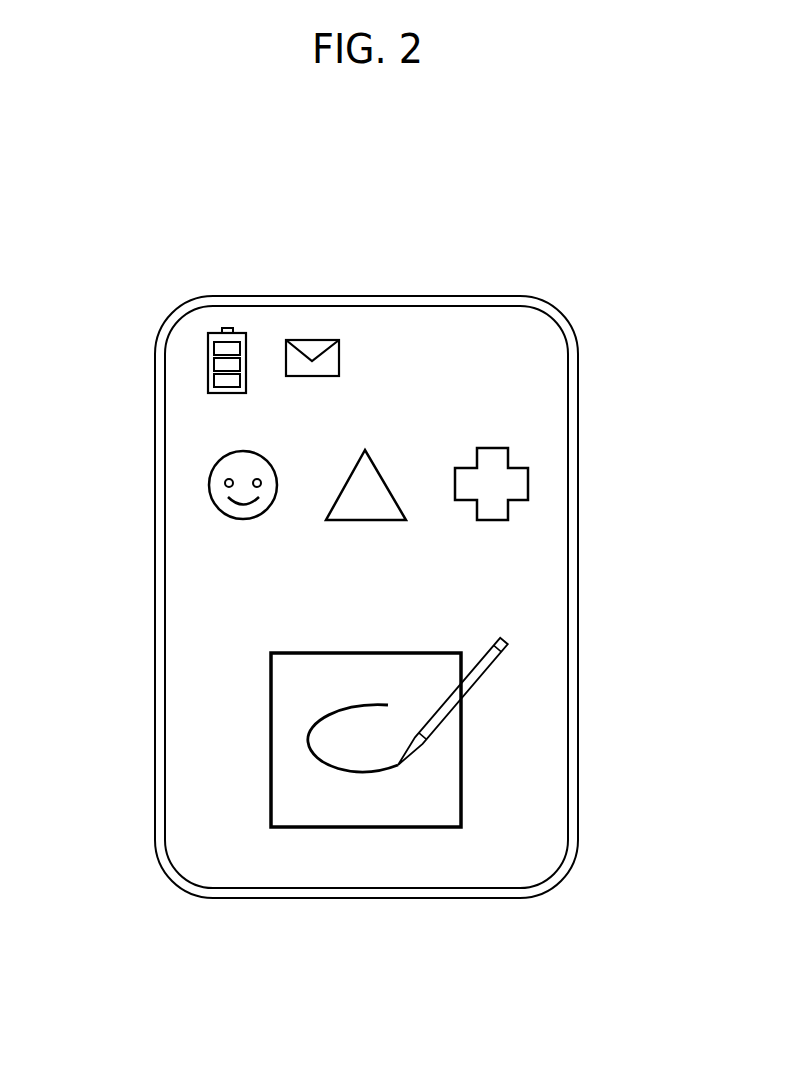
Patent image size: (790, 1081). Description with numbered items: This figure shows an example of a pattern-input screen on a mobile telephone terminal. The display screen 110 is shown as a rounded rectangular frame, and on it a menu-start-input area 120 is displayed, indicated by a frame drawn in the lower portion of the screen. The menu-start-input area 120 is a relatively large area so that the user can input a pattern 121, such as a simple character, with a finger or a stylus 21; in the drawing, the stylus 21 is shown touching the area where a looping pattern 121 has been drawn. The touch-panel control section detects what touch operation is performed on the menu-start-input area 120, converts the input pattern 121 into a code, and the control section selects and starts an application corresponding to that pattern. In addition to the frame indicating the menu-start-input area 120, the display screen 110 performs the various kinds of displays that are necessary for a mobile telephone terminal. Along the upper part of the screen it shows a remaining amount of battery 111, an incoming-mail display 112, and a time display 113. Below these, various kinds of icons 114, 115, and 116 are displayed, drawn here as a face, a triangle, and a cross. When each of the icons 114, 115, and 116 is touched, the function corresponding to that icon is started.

The display screen 110 is at (557, 362).
The remaining amount of battery 111 is at (224, 328).
The incoming-mail display 112 is at (308, 340).
The time display 113 is at (487, 347).
The icon 114 is at (209, 480).
The icon 115 is at (365, 450).
The icon 116 is at (528, 477).
The menu-start-input area 120 is at (462, 810).
The pattern 121 is at (322, 762).
The stylus 21 is at (505, 642).